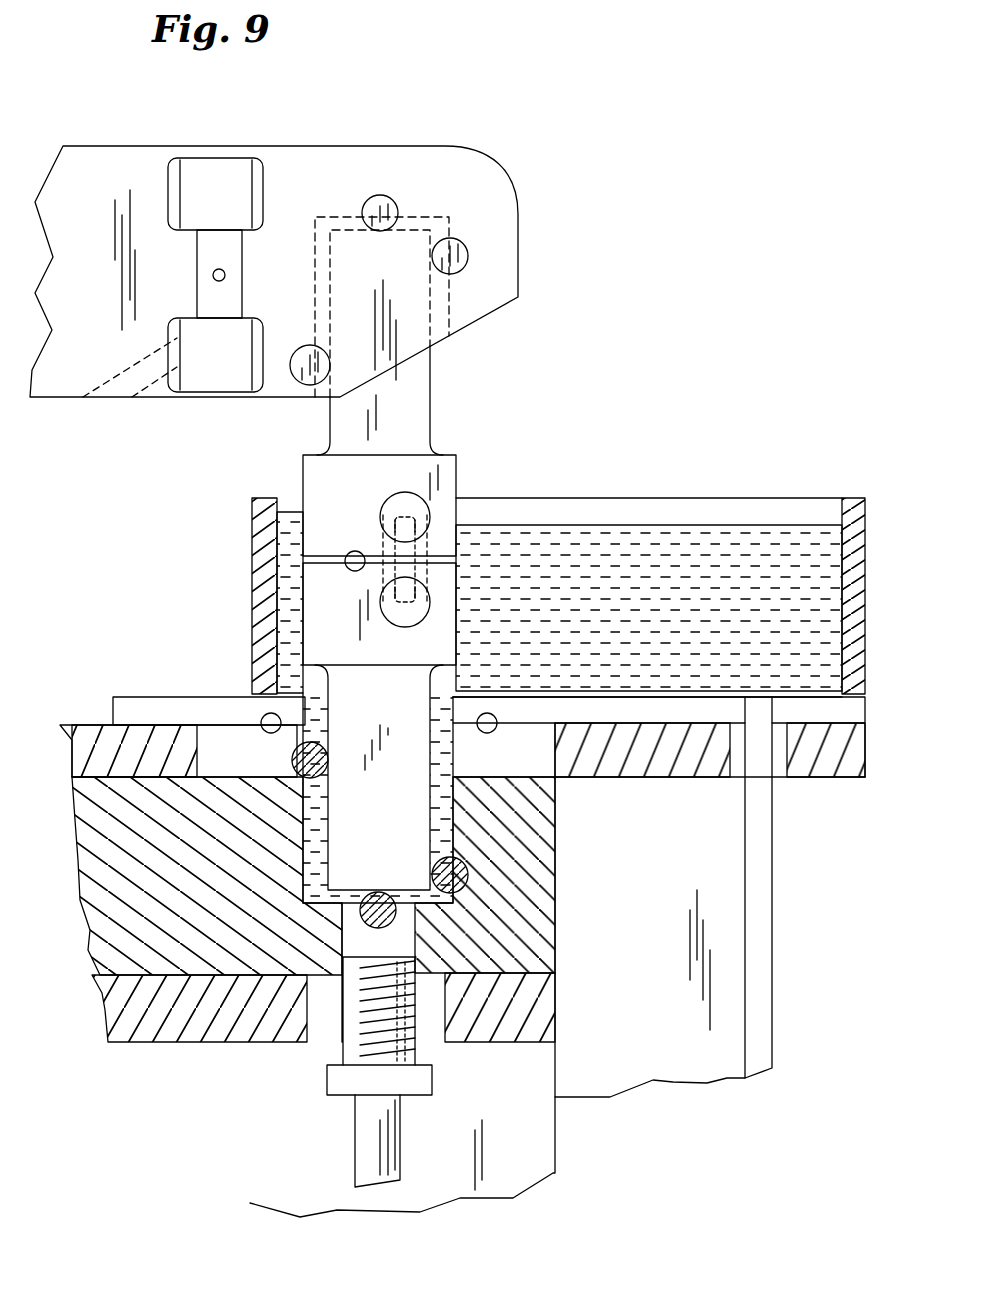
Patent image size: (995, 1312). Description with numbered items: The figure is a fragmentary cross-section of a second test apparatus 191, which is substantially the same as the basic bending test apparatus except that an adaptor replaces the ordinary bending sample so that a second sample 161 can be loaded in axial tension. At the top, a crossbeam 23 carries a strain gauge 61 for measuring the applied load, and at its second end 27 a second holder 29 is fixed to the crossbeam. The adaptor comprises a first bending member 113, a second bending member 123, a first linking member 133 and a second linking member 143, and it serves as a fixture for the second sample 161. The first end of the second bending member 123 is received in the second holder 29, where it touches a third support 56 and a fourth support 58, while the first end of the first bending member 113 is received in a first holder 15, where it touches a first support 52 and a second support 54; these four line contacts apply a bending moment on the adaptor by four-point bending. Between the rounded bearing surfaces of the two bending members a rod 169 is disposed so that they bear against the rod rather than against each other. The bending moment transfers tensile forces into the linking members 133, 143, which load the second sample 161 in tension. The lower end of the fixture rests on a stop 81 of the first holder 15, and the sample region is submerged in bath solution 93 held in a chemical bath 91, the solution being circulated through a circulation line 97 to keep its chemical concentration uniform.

The crossbeam 23 is at (88, 147).
The strain gauge 61 is at (208, 147).
The second end of crossbeam 27 is at (347, 147).
The second holder 29 is at (435, 213).
The third support 56 is at (460, 250).
The fourth support 58 is at (298, 385).
The second bending member 123 is at (415, 397).
The second test apparatus 191 is at (706, 187).
The second linking member 143 is at (398, 500).
The second sample 161 is at (392, 525).
The rod 169 is at (347, 565).
The first linking member 133 is at (390, 612).
The bath solution 93 is at (715, 518).
The chemical bath 91 is at (848, 498).
The second support 54 is at (292, 760).
The first bending member 113 is at (413, 810).
The first holder 15 is at (455, 833).
The first support 52 is at (470, 868).
The stop 81 is at (395, 918).
The circulation line 97 is at (768, 928).